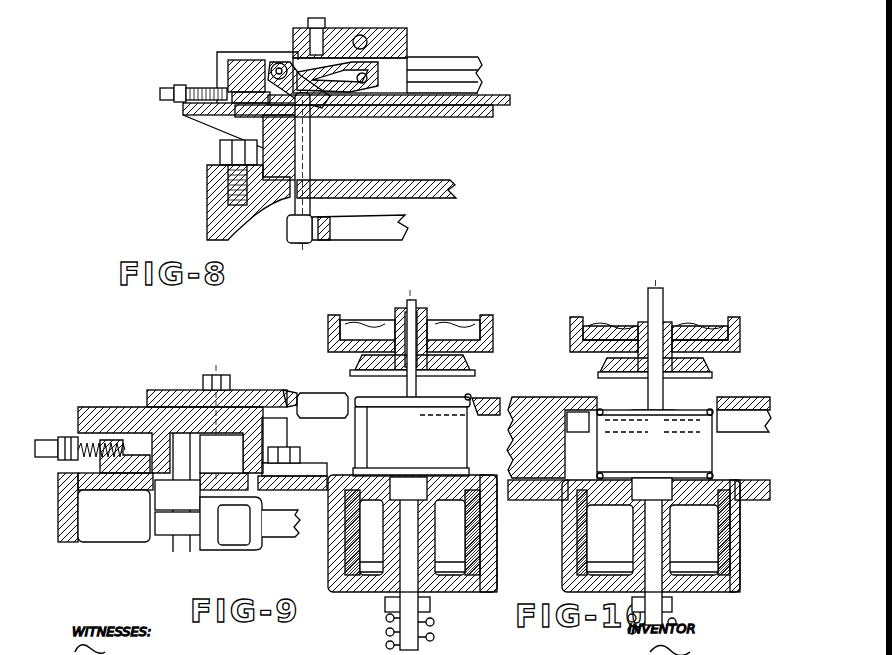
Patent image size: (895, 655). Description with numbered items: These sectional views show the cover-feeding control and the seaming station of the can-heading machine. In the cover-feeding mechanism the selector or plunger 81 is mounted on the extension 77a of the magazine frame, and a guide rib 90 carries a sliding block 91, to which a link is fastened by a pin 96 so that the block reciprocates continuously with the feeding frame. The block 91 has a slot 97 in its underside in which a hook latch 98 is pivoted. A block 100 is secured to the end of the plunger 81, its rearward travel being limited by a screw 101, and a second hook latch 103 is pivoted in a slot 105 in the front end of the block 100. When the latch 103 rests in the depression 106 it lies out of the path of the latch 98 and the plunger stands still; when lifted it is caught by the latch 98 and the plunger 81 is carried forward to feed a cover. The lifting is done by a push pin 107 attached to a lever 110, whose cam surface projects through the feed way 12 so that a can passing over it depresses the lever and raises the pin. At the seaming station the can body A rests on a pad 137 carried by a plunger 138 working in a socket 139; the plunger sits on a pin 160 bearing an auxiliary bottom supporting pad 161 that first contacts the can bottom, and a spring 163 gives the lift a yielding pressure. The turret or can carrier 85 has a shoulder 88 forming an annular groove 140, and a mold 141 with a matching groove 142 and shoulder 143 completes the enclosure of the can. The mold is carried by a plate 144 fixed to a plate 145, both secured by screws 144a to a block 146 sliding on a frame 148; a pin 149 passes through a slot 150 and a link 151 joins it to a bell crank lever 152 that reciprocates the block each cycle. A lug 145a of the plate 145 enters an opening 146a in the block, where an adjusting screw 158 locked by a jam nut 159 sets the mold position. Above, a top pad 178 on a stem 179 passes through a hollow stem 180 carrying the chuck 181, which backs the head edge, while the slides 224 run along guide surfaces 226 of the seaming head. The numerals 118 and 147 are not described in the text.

In FIG. 8, the feed way 12 is at (430, 198).
In FIG. 8, the extension of the magazine frame 77a is at (468, 118).
In FIG. 8, the selector or plunger 81 is at (511, 99).
In FIG. 8, the guide rib 90 is at (449, 74).
In FIG. 8, the sliding block 91 is at (293, 34).
In FIG. 8, the pin 96 is at (310, 21).
In FIG. 8, the slot 97 is at (392, 75).
In FIG. 8, the hook latch 98 is at (345, 84).
In FIG. 8, the block 100 is at (216, 62).
In FIG. 8, the screw 101 is at (160, 93).
In FIG. 8, the hook latch 103 is at (292, 105).
In FIG. 8, the slot 105 is at (264, 65).
In FIG. 8, the depression 106 is at (242, 152).
In FIG. 8, the push pin 107 is at (293, 205).
In FIG. 8, the lever 110 is at (360, 228).
In FIG. 8, the stem 118 is at (372, 27).
In FIG. 9, the pad 137 is at (436, 517).
In FIG. 10, the pad 137 is at (646, 536).
In FIG. 9, the plunger 138 is at (488, 522).
In FIG. 10, the plunger 138 is at (737, 517).
In FIG. 9, the socket 139 is at (493, 565).
In FIG. 10, the socket 139 is at (702, 585).
In FIG. 9, the annular groove 140 is at (472, 393).
In FIG. 9, the mold 141 is at (287, 392).
In FIG. 9, the groove 142 is at (316, 404).
In FIG. 9, the shoulder 143 is at (324, 420).
In FIG. 9, the plate 144 is at (233, 389).
In FIG. 9, the screws 144a is at (218, 373).
In FIG. 9, the plate 145 is at (138, 408).
In FIG. 9, the lug 145a is at (138, 448).
In FIG. 9, the block 146 is at (201, 448).
In FIG. 9, the opening 146a is at (78, 520).
In FIG. 9, the bracket 147 is at (305, 468).
In FIG. 9, the frame 148 is at (112, 500).
In FIG. 9, the pin 149 is at (153, 500).
In FIG. 9, the slot 150 is at (212, 497).
In FIG. 9, the link 151 is at (172, 527).
In FIG. 9, the bell crank lever 152 is at (273, 530).
In FIG. 9, the adjusting screw 158 is at (78, 470).
In FIG. 9, the jam nut 159 is at (76, 440).
In FIG. 9, the pin 160 is at (398, 621).
In FIG. 10, the pin 160 is at (645, 618).
In FIG. 9, the auxiliary bottom supporting pad 161 is at (392, 500).
In FIG. 10, the auxiliary bottom supporting pad 161 is at (640, 502).
In FIG. 9, the spring 163 is at (434, 623).
In FIG. 9, the top pad 178 is at (418, 377).
In FIG. 10, the top pad 178 is at (670, 410).
In FIG. 9, the stem 179 is at (419, 330).
In FIG. 10, the stem 179 is at (665, 303).
In FIG. 9, the hollow stem 180 is at (418, 313).
In FIG. 10, the hollow stem 180 is at (673, 332).
In FIG. 9, the chuck 181 is at (391, 370).
In FIG. 10, the chuck 181 is at (708, 366).
In FIG. 9, the slides 224 is at (363, 330).
In FIG. 10, the slides 224 is at (597, 323).
In FIG. 9, the guide surfaces 226 is at (496, 318).
In FIG. 10, the guide surfaces 226 is at (742, 343).
In FIG. 9, the turret or can carrier 85 is at (480, 402).
In FIG. 9, the shoulder 88 is at (466, 412).
In FIG. 9, the can body A is at (411, 441).
In FIG. 10, the can body A is at (713, 456).